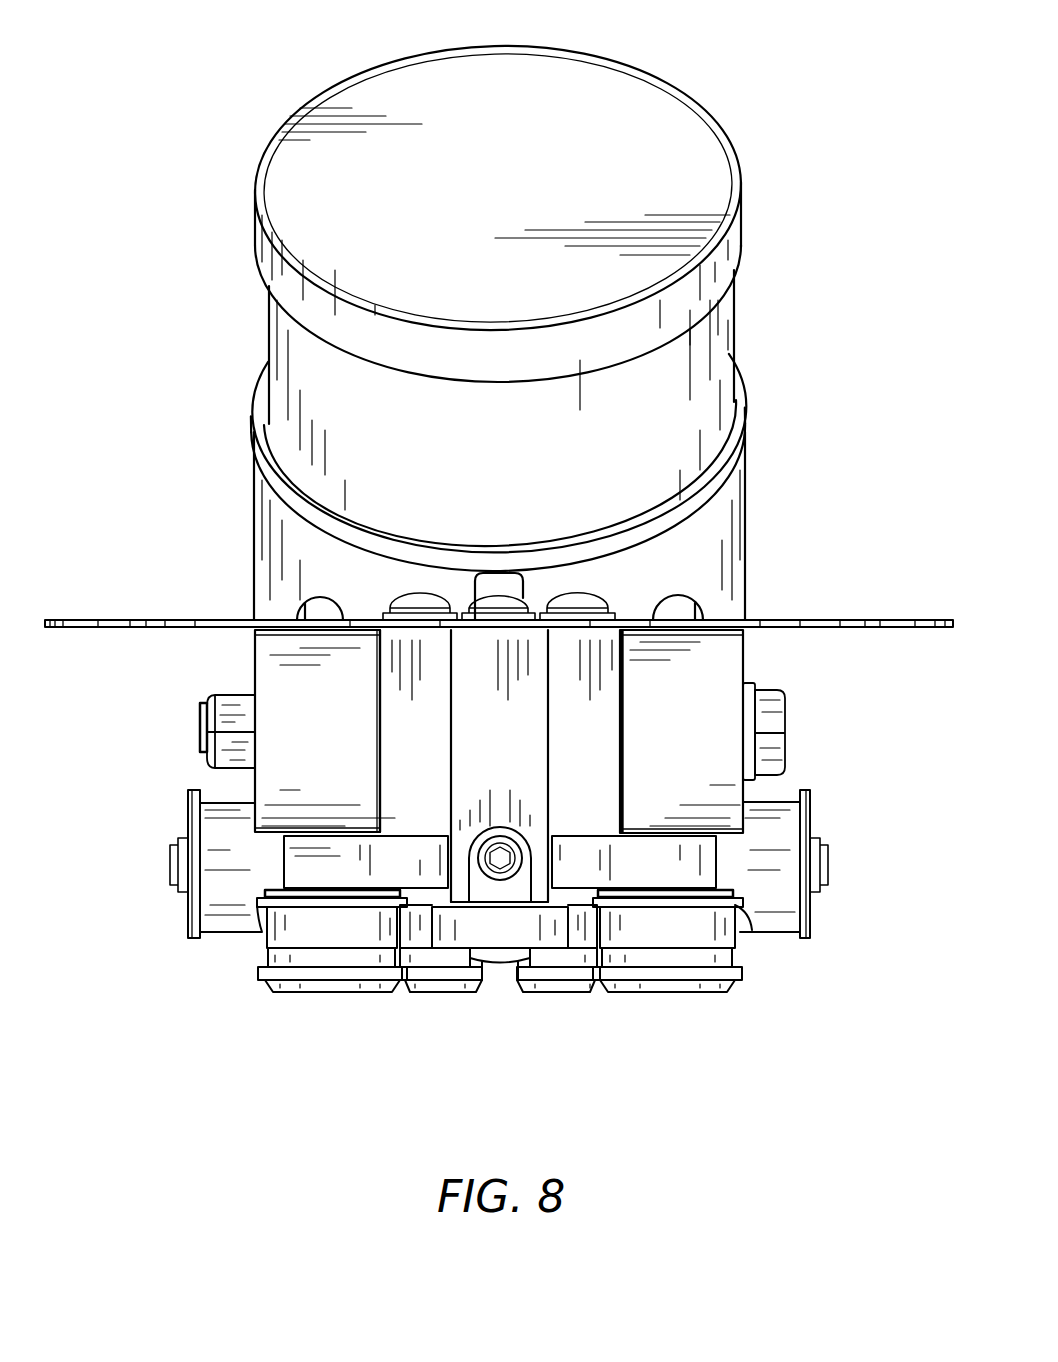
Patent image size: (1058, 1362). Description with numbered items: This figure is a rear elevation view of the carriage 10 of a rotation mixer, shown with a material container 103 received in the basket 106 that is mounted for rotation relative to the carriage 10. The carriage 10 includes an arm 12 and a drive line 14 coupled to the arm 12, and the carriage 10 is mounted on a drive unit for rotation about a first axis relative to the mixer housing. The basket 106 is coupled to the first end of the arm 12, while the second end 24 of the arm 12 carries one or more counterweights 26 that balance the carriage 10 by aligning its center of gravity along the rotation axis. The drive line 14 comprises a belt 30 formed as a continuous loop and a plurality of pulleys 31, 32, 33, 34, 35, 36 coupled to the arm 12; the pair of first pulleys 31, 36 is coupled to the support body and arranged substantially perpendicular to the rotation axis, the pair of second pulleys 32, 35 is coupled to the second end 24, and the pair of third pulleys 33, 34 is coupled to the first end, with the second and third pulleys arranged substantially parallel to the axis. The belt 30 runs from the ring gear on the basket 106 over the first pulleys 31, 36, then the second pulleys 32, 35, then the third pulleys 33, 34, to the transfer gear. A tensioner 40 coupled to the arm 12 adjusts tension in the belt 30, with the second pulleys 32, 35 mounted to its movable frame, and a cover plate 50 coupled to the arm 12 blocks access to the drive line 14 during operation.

The carriage 10 is at (840, 467).
The arm 12 is at (443, 672).
The drive line 14 is at (479, 845).
The second end 24 is at (420, 717).
The counterweights 26 is at (697, 744).
The belt 30 is at (528, 975).
The first pulley 31 is at (810, 823).
The second pulley 32 is at (672, 995).
The third pulley 33 is at (580, 995).
The third pulley 34 is at (412, 995).
The second pulley 35 is at (338, 995).
The first pulley 36 is at (177, 817).
The tensioner 40 is at (400, 868).
The cover plate 50 is at (878, 617).
The material container 103 is at (633, 117).
The basket 106 is at (242, 520).